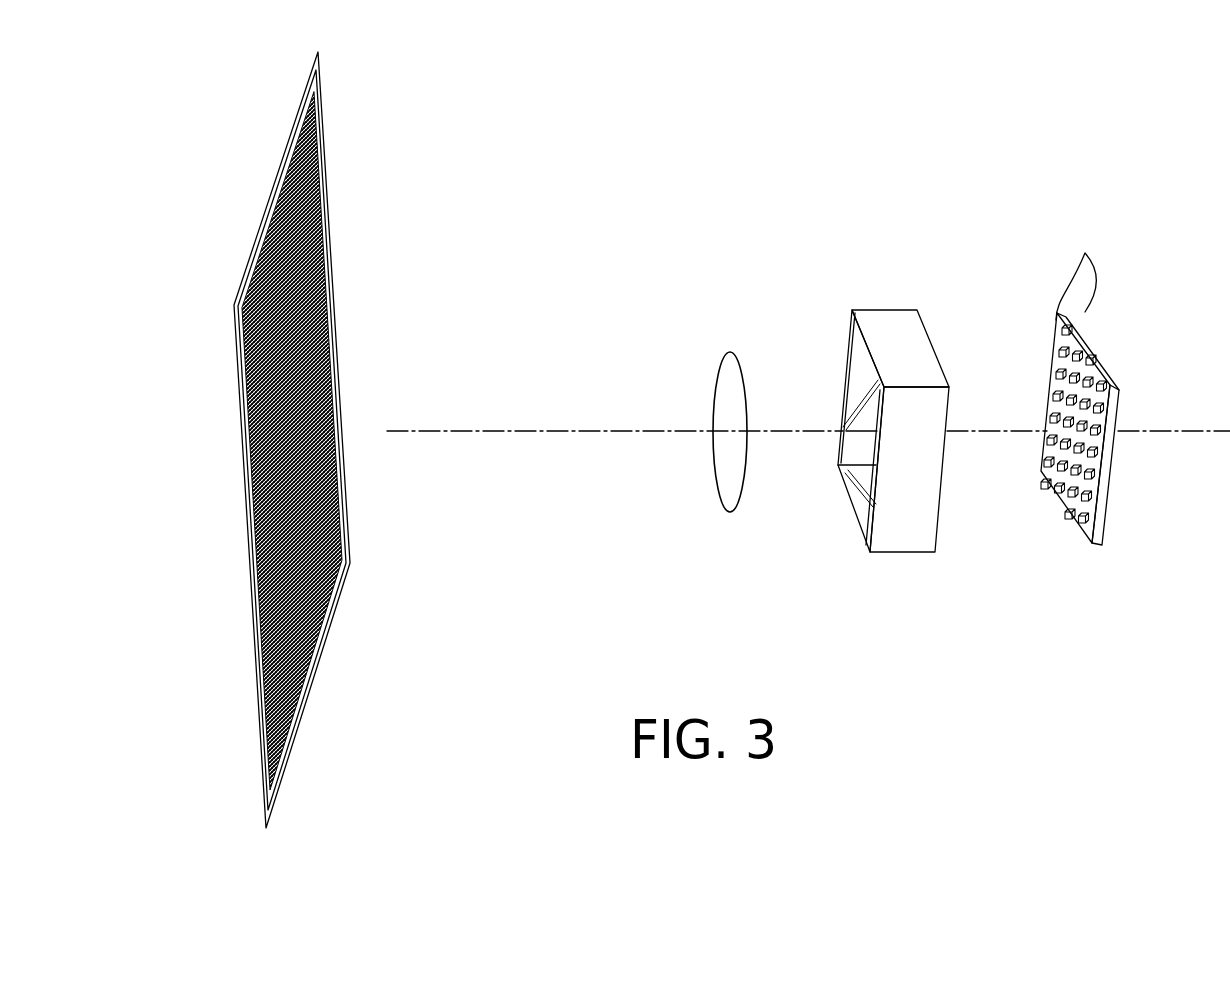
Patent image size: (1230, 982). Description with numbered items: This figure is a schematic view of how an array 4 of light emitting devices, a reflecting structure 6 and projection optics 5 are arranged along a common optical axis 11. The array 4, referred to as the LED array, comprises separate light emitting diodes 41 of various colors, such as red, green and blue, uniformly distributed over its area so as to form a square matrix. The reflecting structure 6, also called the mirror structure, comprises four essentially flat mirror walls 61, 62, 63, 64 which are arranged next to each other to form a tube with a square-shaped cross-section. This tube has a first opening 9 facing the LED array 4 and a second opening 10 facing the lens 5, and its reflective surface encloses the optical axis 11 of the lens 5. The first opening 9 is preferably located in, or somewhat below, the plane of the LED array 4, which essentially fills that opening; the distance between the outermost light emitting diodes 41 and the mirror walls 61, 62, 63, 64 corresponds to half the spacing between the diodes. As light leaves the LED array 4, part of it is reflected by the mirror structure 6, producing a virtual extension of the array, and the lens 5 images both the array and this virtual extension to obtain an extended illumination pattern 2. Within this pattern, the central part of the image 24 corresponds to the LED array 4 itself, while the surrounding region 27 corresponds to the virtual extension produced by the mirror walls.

The extended illumination pattern 2 is at (288, 204).
The surrounding region 27 is at (322, 236).
The central part of the image 24 is at (330, 473).
The optical axis 11 is at (612, 430).
The projection optics 5 is at (729, 362).
The reflecting structure 6 is at (888, 418).
The mirror wall 61 is at (907, 325).
The mirror wall 62 is at (910, 540).
The mirror wall 63 is at (860, 507).
The mirror wall 64 is at (852, 338).
The second opening 10 is at (821, 466).
The first opening 9 is at (957, 514).
The array of light emitting devices 4 is at (1116, 381).
The light emitting diodes 41 is at (1078, 269).